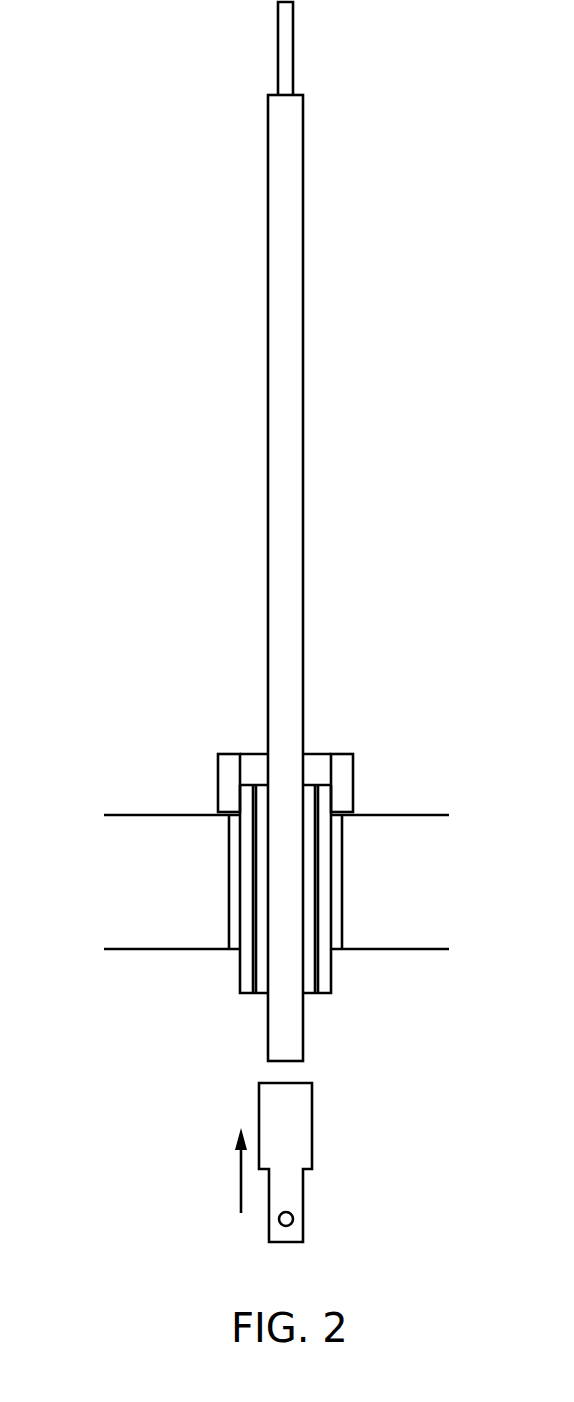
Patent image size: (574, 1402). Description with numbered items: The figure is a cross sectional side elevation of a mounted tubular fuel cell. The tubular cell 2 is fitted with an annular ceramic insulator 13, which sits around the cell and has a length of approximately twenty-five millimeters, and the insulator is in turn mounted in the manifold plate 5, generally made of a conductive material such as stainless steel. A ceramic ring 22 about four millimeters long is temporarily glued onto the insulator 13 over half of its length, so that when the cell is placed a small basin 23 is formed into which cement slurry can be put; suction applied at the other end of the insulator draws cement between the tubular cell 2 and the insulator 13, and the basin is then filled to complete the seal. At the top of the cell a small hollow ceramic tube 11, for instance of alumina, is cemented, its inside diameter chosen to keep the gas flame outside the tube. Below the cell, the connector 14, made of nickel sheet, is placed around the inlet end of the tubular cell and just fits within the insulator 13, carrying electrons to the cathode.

The hollow ceramic tube 11 is at (294, 21).
The tubular cell 2 is at (304, 441).
The ceramic ring 22 is at (343, 781).
The basin 23 is at (315, 765).
The ceramic insulator 13 is at (323, 905).
The manifold plate 5 is at (115, 889).
The connector 14 is at (313, 1148).